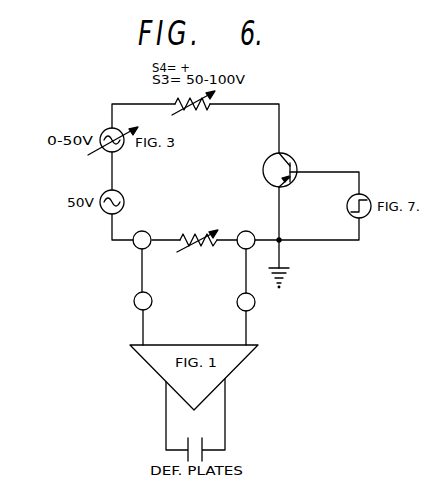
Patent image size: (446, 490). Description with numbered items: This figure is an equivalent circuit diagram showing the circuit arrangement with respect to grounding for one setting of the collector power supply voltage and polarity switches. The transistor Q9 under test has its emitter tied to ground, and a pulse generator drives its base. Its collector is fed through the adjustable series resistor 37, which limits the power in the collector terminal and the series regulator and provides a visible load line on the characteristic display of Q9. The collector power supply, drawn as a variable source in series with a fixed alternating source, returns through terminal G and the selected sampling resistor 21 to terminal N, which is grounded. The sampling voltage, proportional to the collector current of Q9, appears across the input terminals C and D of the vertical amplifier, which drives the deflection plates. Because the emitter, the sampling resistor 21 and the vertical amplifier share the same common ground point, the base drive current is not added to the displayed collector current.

The adjustable series resistor 37 is at (203, 108).
The sampling resistor 21 is at (197, 234).
The transistor Q9 is at (271, 170).
The terminal G is at (142, 240).
The terminal N is at (246, 240).
The input terminal C is at (143, 301).
The input terminal D is at (246, 302).